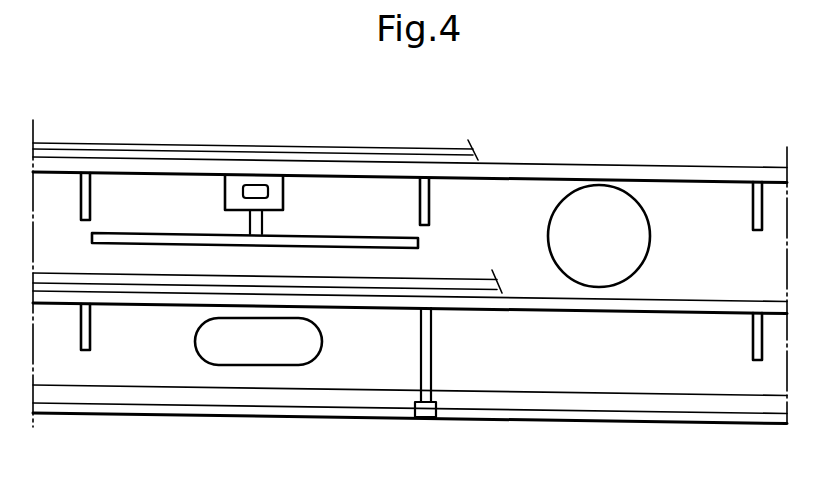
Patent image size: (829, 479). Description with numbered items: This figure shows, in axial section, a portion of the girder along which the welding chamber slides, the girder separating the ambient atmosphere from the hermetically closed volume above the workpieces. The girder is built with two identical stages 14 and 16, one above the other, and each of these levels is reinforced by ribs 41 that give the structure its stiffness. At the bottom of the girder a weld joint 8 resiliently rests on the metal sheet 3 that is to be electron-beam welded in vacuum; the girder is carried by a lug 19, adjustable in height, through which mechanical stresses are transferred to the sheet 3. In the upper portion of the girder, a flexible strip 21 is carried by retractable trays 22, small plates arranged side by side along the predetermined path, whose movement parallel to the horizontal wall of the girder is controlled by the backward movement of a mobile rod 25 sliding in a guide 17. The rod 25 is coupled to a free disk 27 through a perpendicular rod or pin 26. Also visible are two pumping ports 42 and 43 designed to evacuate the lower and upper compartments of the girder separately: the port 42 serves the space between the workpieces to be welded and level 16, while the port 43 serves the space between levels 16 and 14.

The metal sheet 3 is at (336, 462).
The weld joint 8 is at (230, 407).
The stage 14 is at (122, 166).
The stage 16 is at (348, 306).
The guide 17 is at (235, 178).
The lug 19 is at (432, 365).
The flexible strip 21 is at (171, 148).
The tray 22 is at (327, 163).
The rod 25 is at (257, 190).
The pin 26 is at (262, 222).
The free disk 27 is at (388, 240).
The rib 41 is at (429, 208).
The pumping port 42 is at (243, 355).
The pumping port 43 is at (586, 247).